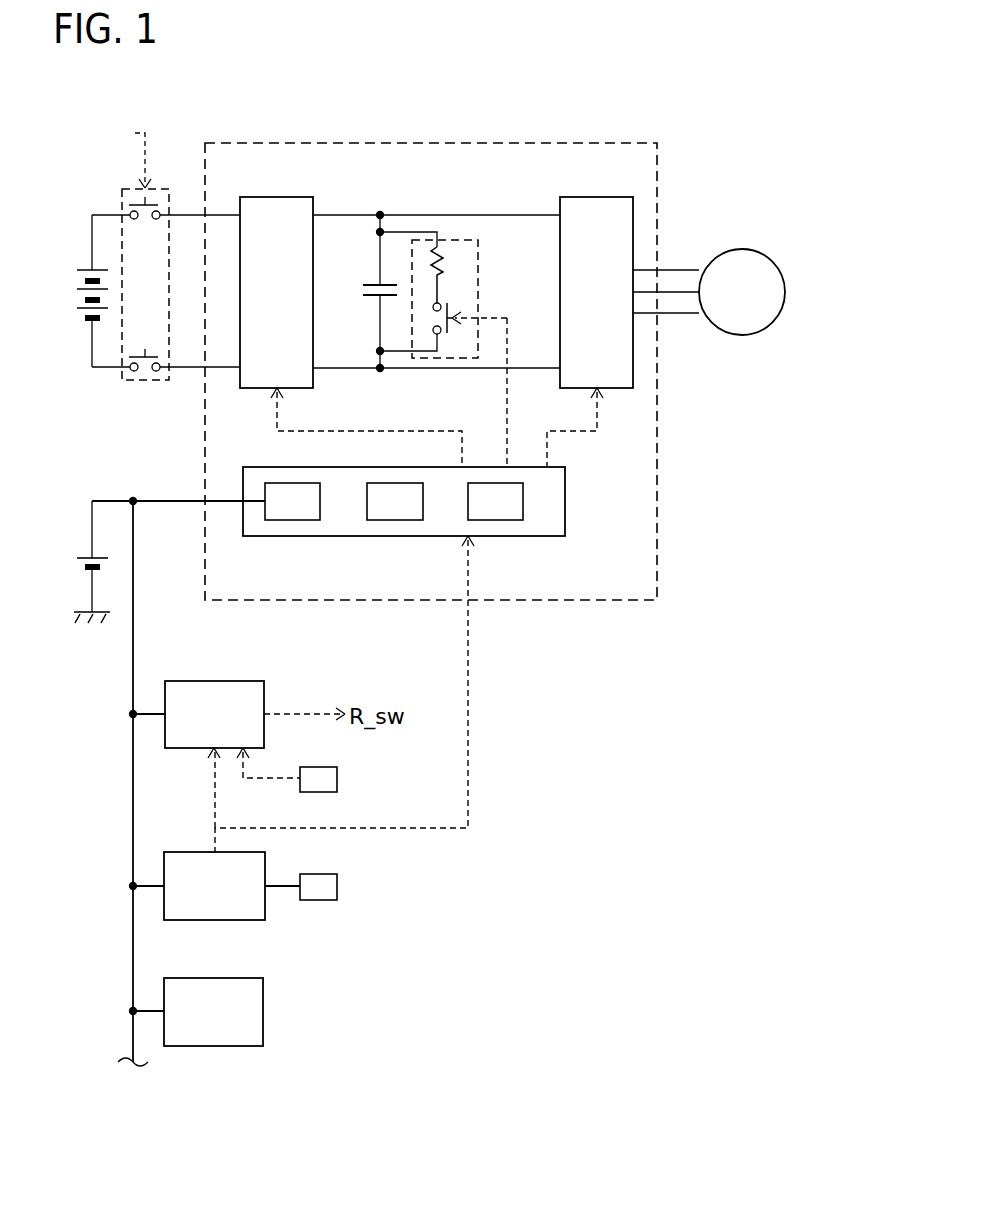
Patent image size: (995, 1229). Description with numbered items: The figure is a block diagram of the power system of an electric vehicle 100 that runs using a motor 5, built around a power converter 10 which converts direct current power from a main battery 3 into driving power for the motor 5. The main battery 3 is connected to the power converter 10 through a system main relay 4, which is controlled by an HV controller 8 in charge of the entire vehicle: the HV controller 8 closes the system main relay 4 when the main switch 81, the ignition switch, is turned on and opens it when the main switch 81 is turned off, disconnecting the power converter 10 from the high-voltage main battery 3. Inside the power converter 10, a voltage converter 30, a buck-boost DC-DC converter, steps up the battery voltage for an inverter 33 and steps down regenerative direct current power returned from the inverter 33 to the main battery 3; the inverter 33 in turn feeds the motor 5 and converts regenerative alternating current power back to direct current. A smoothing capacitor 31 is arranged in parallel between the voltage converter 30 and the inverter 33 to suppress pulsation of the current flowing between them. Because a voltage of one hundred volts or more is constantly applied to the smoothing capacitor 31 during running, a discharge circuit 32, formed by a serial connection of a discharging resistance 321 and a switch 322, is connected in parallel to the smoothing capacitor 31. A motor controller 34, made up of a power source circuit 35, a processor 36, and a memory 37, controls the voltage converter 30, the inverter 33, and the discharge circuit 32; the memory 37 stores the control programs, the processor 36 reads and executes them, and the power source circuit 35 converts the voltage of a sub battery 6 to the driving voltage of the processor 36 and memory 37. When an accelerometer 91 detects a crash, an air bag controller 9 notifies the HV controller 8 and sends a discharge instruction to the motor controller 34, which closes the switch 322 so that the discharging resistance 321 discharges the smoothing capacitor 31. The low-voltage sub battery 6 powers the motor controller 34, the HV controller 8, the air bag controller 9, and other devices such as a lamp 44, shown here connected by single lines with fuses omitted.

The electric vehicle 100 is at (647, 86).
The power converter 10 is at (255, 143).
The main battery 3 is at (84, 268).
The system main relay 4 is at (145, 383).
The voltage converter 30 is at (290, 197).
The smoothing capacitor 31 is at (366, 285).
The discharge circuit 32 is at (467, 268).
The discharging resistance 321 is at (447, 247).
The switch 322 is at (449, 305).
The inverter 33 is at (590, 197).
The motor 5 is at (742, 249).
The motor controller 34 is at (440, 520).
The power source circuit 35 is at (303, 520).
The processor 36 is at (405, 520).
The memory 37 is at (510, 520).
The sub battery 6 is at (85, 558).
The HV controller 8 is at (200, 681).
The main switch 81 is at (337, 778).
The air bag controller 9 is at (248, 920).
The accelerometer 91 is at (337, 886).
The lamp 44 is at (263, 1015).